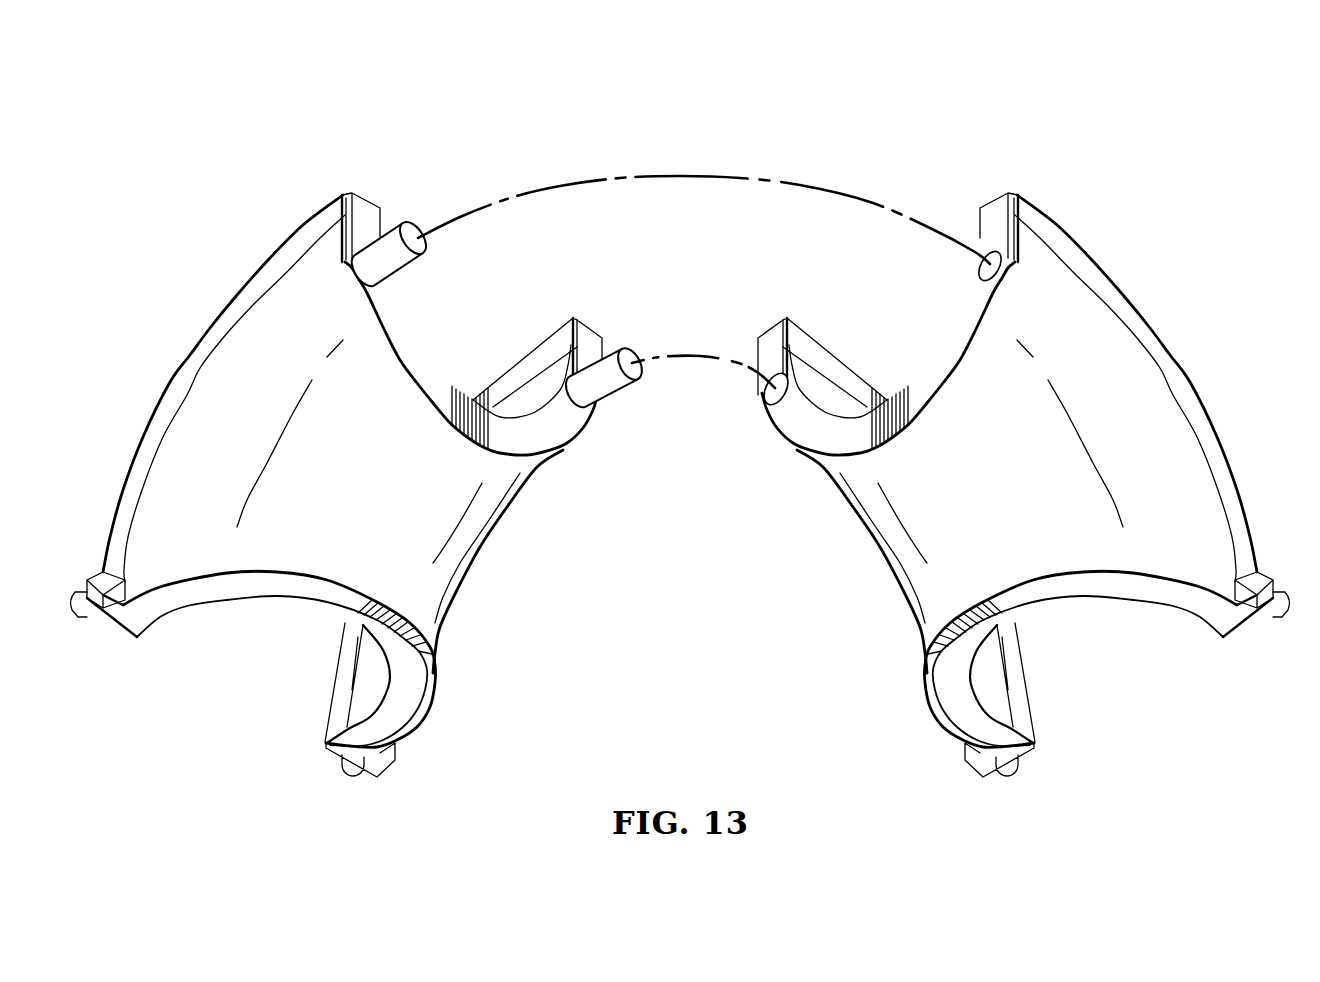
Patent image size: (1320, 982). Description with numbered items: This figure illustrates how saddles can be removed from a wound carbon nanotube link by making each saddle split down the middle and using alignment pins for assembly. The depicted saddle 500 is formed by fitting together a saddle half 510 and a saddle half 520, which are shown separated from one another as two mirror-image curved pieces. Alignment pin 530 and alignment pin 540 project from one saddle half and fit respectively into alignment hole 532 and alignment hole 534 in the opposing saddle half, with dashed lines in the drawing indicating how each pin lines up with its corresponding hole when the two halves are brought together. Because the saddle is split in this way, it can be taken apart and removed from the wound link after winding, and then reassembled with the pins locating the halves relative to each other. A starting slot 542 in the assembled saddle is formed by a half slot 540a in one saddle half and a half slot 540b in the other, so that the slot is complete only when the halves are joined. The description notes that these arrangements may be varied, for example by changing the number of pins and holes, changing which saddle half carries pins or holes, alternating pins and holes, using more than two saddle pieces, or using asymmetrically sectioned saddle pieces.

The saddle 500 is at (216, 142).
The saddle half 510 is at (200, 378).
The saddle half 520 is at (1152, 380).
The alignment pin 530 is at (417, 237).
The alignment hole 532 is at (765, 397).
The alignment hole 534 is at (985, 265).
The alignment pin 540 is at (630, 364).
The half slot 540a is at (352, 203).
The half slot 540b is at (1008, 203).
The starting slot 542 is at (322, 213).